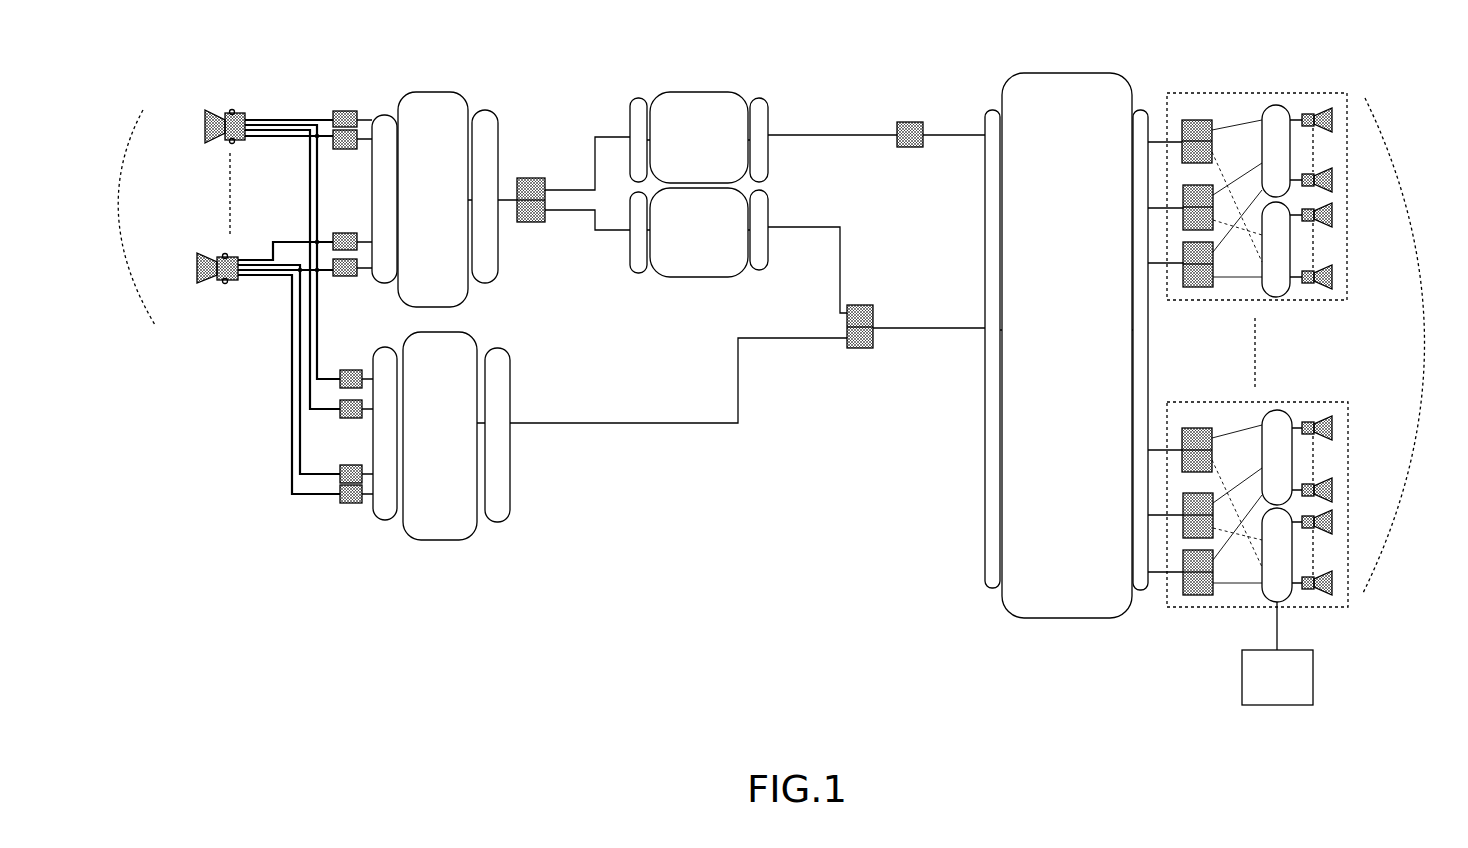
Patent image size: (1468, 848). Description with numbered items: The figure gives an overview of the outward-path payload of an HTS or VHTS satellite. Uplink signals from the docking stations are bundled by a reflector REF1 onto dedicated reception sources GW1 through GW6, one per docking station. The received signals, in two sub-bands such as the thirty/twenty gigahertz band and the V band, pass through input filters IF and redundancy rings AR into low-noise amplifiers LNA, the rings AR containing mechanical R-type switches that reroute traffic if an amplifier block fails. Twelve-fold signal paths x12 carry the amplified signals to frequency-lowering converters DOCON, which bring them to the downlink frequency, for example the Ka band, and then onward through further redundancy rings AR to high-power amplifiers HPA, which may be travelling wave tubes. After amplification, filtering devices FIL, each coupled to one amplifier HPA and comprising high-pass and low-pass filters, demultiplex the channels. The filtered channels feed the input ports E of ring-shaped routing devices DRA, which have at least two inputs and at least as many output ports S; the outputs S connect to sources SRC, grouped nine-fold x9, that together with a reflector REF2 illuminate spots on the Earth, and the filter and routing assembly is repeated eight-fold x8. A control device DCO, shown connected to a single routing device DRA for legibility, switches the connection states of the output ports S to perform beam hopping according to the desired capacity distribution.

The reflector REF1 is at (125, 148).
The reception source GW1 is at (198, 127).
The reception source GW6 is at (191, 268).
The V-band / Ka-band IF filter IF is at (353, 284).
The redundancy ring AR is at (380, 115).
The low-noise amplifier LNA is at (432, 92).
The twelve-fold signal path x12 is at (741, 258).
The frequency-lowering converter DOCON is at (700, 92).
The high-power amplifier HPA is at (1048, 73).
The filtering section FIL is at (1192, 120).
The ring-shaped routing device DRA is at (1272, 105).
The source SRC is at (1332, 168).
The reflector REF2 is at (1408, 205).
The nine-fold source group x9 is at (1327, 351).
The eight-fold assembly repetition x8 is at (1270, 353).
The input port E is at (1245, 585).
The output port S is at (1288, 593).
The control device DCO is at (1277, 677).